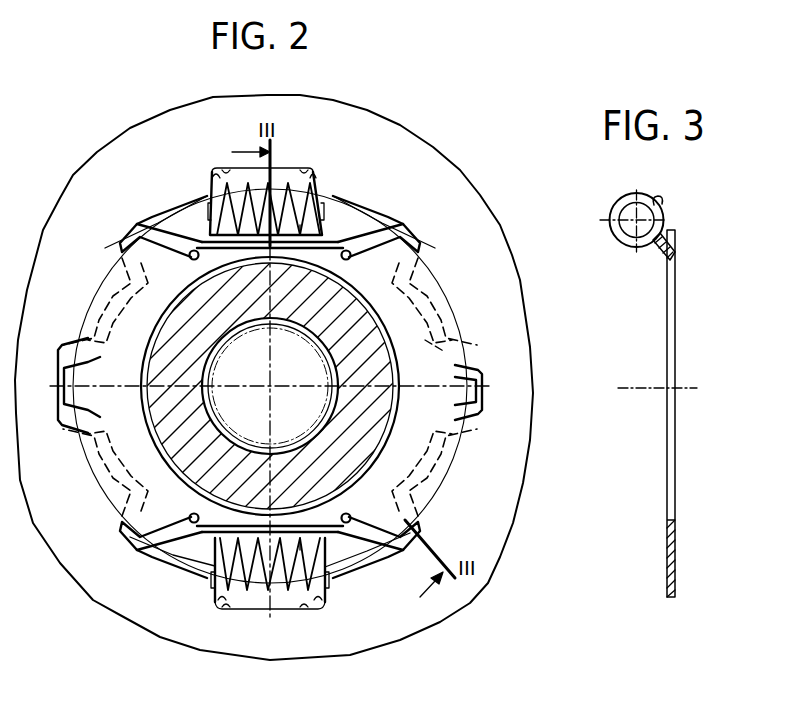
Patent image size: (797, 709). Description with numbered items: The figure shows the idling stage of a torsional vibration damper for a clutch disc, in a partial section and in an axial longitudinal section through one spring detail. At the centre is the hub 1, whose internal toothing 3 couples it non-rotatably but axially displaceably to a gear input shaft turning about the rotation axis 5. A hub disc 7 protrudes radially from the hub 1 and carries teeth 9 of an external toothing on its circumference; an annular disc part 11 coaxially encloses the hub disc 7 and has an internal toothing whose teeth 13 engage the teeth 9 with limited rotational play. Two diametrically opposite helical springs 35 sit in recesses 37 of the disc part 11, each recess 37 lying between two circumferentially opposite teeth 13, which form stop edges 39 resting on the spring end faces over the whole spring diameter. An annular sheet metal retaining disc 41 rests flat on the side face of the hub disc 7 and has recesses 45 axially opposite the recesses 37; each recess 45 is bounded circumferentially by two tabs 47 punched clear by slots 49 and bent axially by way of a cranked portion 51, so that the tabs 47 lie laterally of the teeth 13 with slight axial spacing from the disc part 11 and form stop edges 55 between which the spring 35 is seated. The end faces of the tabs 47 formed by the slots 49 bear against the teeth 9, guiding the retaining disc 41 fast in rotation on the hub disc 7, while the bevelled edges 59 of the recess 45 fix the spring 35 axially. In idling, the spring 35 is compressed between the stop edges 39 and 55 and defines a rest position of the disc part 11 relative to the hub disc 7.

In FIG. 2, the hub 1 is at (162, 430).
In FIG. 2, the internal toothing 3 is at (232, 432).
In FIG. 2, the rotation axis 5 is at (272, 384).
In FIG. 3, the rotation axis 5 is at (688, 388).
In FIG. 2, the hub disc 7 is at (430, 345).
In FIG. 2, the teeth 9 is at (140, 236).
In FIG. 2, the disc part 11 is at (505, 520).
In FIG. 2, the teeth 13 is at (198, 233).
In FIG. 2, the spring 35 is at (233, 170).
In FIG. 3, the spring 35 is at (622, 208).
In FIG. 2, the recess 37 is at (240, 170).
In FIG. 2, the stop edges 39 is at (216, 176).
In FIG. 2, the retaining disc 41 is at (445, 455).
In FIG. 3, the retaining disc 41 is at (676, 548).
In FIG. 2, the recess 45 is at (284, 215).
In FIG. 2, the tabs 47 is at (193, 215).
In FIG. 3, the tabs 47 is at (663, 203).
In FIG. 2, the slots 49 is at (175, 250).
In FIG. 2, the cranked portion 51 is at (170, 222).
In FIG. 3, the cranked portion 51 is at (663, 258).
In FIG. 2, the stop edges 55 is at (208, 210).
In FIG. 2, the edges 59 is at (293, 205).